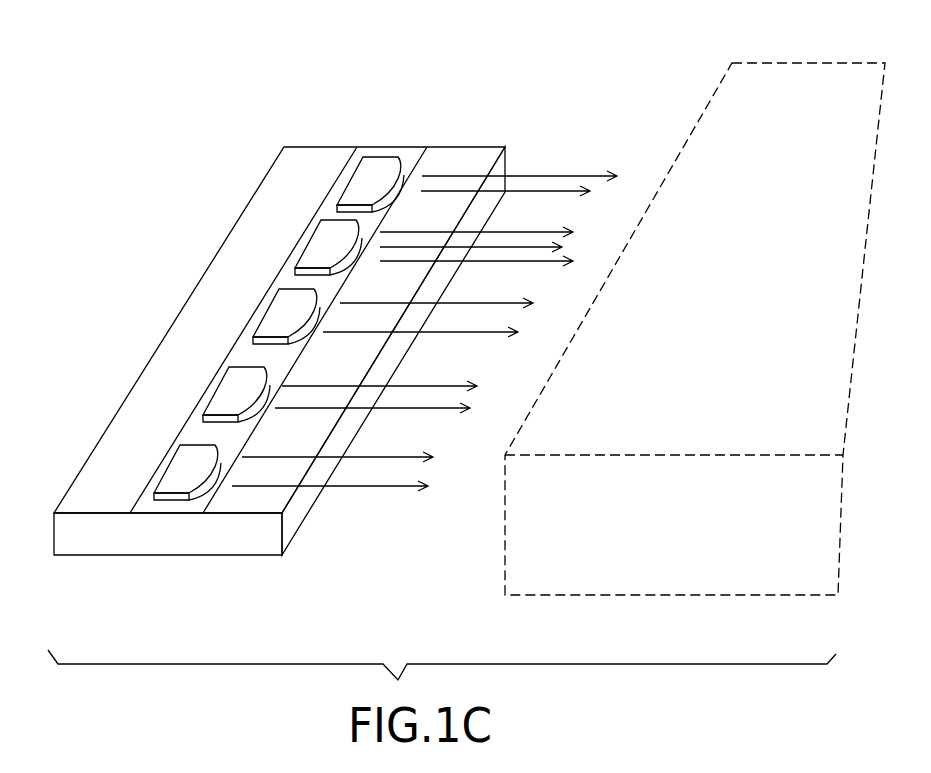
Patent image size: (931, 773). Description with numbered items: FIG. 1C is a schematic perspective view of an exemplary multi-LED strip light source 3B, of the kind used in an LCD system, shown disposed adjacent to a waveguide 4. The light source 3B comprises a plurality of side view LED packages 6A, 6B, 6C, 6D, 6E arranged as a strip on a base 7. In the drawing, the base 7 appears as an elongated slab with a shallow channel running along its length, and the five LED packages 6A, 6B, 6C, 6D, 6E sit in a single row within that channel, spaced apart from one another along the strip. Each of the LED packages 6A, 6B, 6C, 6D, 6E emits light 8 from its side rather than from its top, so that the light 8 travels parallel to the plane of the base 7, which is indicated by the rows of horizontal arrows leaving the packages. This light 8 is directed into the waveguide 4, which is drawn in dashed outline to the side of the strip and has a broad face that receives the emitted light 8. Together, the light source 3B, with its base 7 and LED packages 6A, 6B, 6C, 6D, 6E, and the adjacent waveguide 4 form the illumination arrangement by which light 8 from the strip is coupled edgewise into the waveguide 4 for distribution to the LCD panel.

The light source 3B is at (312, 112).
The waveguide 4 is at (792, 63).
The side view LED package 6A is at (350, 177).
The side view LED package 6B is at (305, 247).
The side view LED package 6C is at (260, 325).
The side view LED package 6D is at (212, 400).
The side view LED package 6E is at (166, 472).
The base 7 is at (205, 545).
The light 8 is at (364, 514).